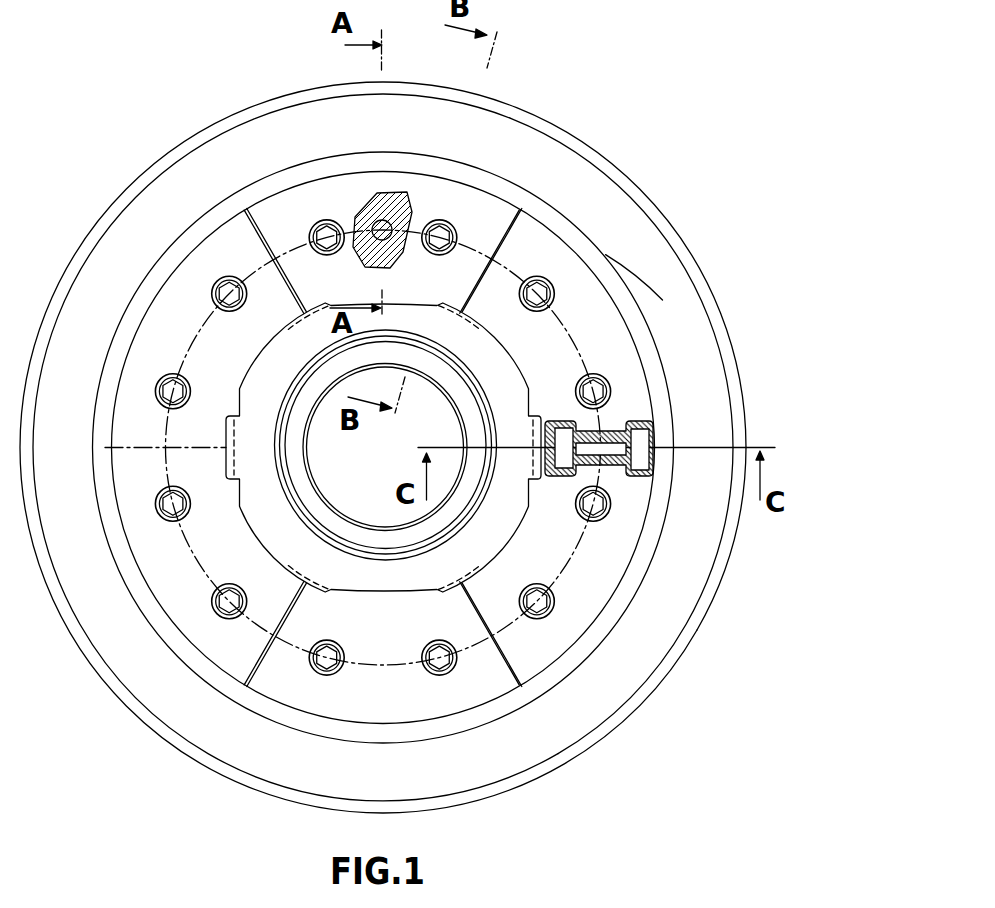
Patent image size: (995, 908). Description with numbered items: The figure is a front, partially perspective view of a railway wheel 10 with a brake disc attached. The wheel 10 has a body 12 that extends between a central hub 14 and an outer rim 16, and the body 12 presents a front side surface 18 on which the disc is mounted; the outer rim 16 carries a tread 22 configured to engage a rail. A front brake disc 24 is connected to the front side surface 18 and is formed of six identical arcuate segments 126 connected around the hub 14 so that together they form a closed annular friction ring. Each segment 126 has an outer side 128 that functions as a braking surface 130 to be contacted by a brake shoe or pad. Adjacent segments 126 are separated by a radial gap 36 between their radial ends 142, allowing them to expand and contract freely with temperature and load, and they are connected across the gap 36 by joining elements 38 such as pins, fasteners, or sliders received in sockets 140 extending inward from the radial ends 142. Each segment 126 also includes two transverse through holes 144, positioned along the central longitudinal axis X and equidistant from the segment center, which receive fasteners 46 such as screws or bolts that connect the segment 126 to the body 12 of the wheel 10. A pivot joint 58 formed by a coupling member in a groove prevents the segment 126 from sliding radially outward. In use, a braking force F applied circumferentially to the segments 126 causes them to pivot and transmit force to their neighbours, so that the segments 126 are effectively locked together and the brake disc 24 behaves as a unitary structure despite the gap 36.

The railway wheel 10 is at (632, 130).
The body 12 is at (693, 342).
The hub 14 is at (450, 397).
The outer rim 16 is at (723, 355).
The front side surface 18 is at (568, 752).
The tread 22 is at (728, 565).
The front brake disc 24 is at (628, 285).
The radial gap 36 is at (515, 212).
The joining element 38 is at (563, 445).
The fastener 46 is at (328, 223).
The pivot joint 58 is at (372, 224).
The segment 126 is at (403, 175).
The outer side 128 is at (470, 195).
The braking surface 130 is at (386, 445).
The socket 140 is at (640, 425).
The radial end 142 is at (257, 231).
The through hole 144 is at (338, 252).
The central axis X is at (147, 300).
The braking force F is at (403, 328).